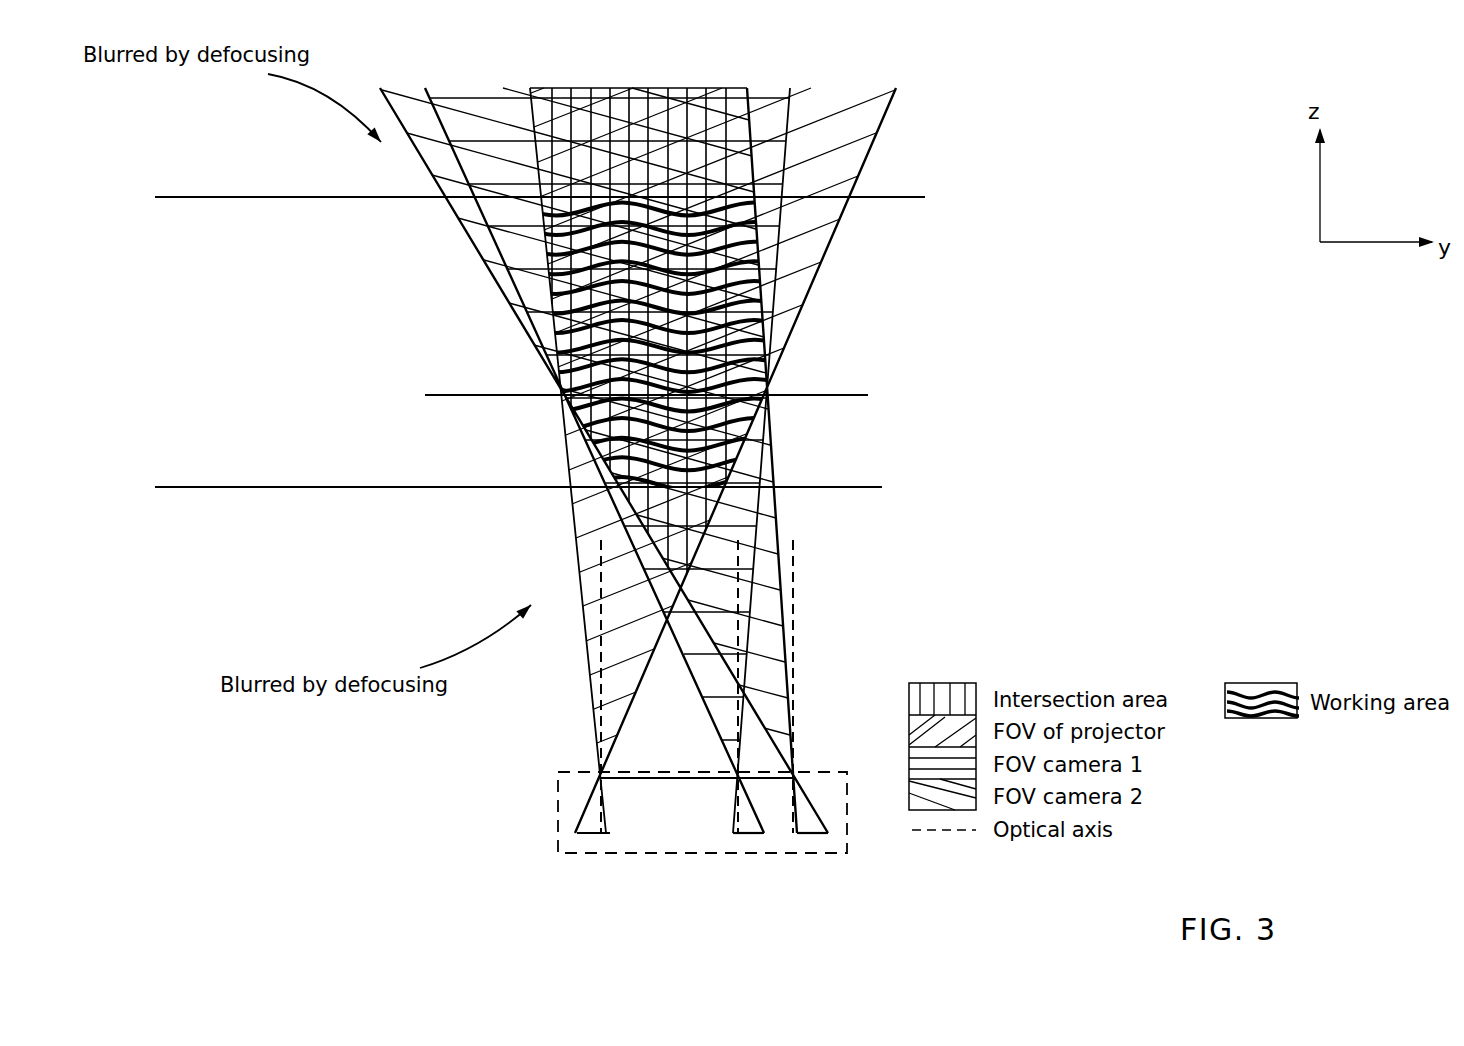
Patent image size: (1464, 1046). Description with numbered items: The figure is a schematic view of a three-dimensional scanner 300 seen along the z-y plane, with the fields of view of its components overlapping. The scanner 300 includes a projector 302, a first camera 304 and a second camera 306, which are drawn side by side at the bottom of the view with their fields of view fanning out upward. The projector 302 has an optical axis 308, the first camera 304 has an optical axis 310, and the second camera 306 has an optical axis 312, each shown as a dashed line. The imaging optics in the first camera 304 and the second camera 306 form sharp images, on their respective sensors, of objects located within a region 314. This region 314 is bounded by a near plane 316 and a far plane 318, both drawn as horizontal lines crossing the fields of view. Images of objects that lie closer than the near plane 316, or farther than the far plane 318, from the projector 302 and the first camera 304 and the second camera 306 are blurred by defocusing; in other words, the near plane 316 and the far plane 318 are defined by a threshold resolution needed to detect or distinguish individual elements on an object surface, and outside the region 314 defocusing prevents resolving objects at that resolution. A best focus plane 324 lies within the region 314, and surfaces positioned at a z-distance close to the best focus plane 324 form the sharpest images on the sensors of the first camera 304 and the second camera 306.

The 3D scanner 300 is at (822, 835).
The projector 302 is at (590, 833).
The first camera 304 is at (752, 833).
The second camera 306 is at (817, 833).
The optical axis 308 is at (600, 548).
The optical axis 310 is at (740, 569).
The optical axis 312 is at (798, 621).
The region 314 is at (460, 293).
The near plane 316 is at (606, 488).
The far plane 318 is at (620, 197).
The best focus plane 324 is at (770, 395).